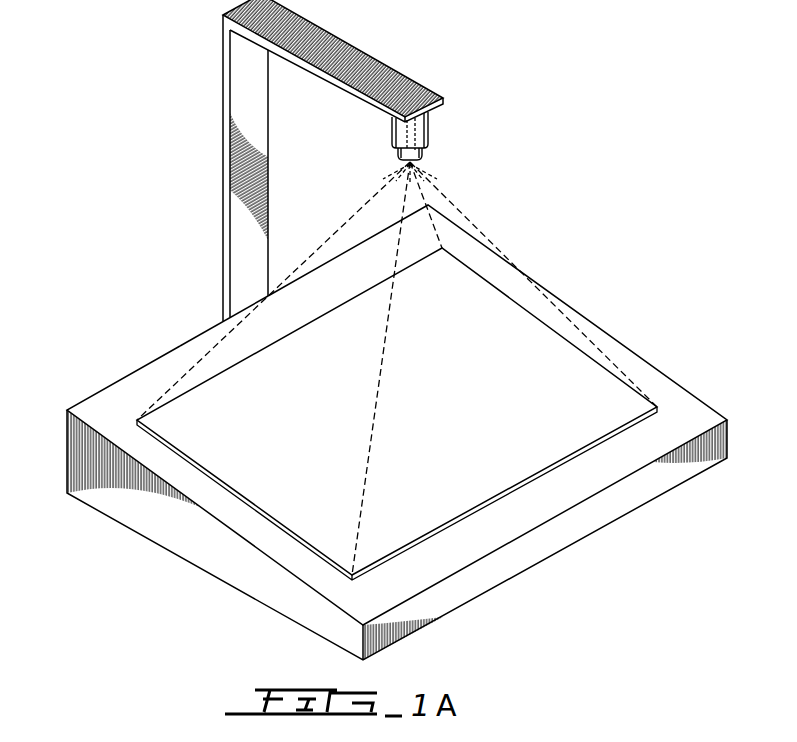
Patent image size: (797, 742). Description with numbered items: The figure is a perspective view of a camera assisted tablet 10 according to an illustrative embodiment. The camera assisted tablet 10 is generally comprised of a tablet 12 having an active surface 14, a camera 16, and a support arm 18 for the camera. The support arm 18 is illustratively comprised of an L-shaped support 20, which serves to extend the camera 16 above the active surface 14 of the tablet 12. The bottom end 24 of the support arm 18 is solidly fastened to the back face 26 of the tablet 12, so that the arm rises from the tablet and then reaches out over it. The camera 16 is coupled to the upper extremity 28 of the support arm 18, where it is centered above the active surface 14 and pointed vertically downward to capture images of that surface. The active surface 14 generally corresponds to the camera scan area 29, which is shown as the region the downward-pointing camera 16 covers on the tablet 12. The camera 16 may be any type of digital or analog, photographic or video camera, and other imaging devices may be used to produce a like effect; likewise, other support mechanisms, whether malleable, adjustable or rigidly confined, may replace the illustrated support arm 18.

The camera assisted tablet 10 is at (390, 330).
The tablet 12 is at (208, 548).
The active surface 14 is at (603, 413).
The camera 16 is at (418, 137).
The support arm 18 is at (238, 208).
The L-shaped support 20 is at (291, 160).
The bottom end 24 is at (212, 327).
The back face 26 is at (65, 450).
The upper extremity 28 is at (428, 92).
The camera scan area 29 is at (380, 337).